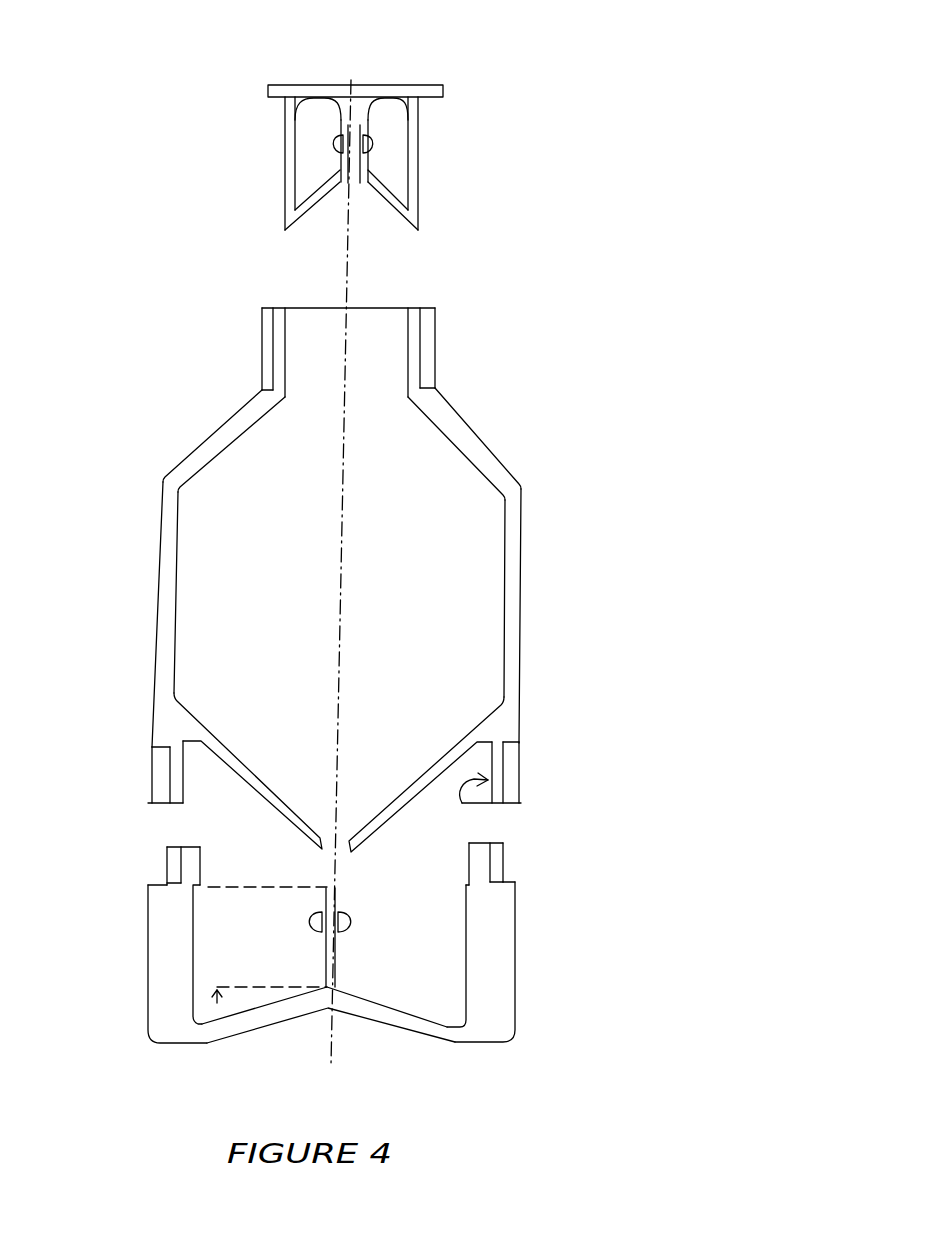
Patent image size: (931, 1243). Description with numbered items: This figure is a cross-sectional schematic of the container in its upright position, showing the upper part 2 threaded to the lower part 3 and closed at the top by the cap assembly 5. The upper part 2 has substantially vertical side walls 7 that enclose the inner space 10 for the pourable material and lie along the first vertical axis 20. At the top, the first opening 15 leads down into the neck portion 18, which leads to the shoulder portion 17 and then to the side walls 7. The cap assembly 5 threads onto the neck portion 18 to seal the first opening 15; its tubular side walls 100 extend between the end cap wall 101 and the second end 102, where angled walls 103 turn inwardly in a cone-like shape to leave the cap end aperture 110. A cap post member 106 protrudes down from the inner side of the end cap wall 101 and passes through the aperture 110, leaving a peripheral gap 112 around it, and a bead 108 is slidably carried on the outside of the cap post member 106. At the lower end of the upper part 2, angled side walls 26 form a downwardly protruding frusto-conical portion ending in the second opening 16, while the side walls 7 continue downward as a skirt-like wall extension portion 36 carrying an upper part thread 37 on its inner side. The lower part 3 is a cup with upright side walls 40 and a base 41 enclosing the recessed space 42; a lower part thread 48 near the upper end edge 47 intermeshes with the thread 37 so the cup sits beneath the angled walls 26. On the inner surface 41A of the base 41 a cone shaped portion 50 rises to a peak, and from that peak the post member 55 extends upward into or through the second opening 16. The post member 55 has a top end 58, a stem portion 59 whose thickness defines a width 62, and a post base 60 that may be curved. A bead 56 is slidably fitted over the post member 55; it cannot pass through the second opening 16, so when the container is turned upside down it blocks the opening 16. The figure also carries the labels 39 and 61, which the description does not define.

The upper part 2 is at (540, 510).
The lower part 3 is at (588, 952).
The cap assembly 5 is at (197, 147).
The side walls 7 is at (522, 553).
The inner space 10 is at (248, 568).
The first opening 15 is at (400, 300).
The second opening 16 is at (340, 853).
The shoulder portion 17 is at (468, 435).
The neck portion 18 is at (240, 372).
The first vertical axis 20 is at (340, 610).
The angled side walls 26 is at (415, 778).
The downward wall extension portion 36 is at (151, 772).
The upper part thread 37 is at (435, 342).
The recirculation flow 39 is at (206, 777).
The lower part upright side walls 40 is at (147, 950).
The base 41 is at (443, 1045).
The inner surface 41A is at (419, 1003).
The recessed space 42 is at (327, 940).
The upper end edge 47 is at (490, 843).
The lower part thread 48 is at (167, 860).
The cone shaped portion 50 is at (367, 997).
The post member 55 is at (338, 964).
The bead 56 is at (340, 928).
The top end 58 is at (338, 900).
The stem portion 59 is at (269, 983).
The post base 60 is at (322, 985).
The inflow direction 61 is at (227, 837).
The width 62 is at (320, 902).
The side walls 100 is at (418, 185).
The end cap wall 101 is at (418, 83).
The second end 102 is at (417, 232).
The angled walls 103 is at (378, 205).
The cap post member 106 is at (343, 155).
The bead 108 is at (377, 143).
The cap end aperture 110 is at (345, 200).
The peripheral gap 112 is at (338, 127).